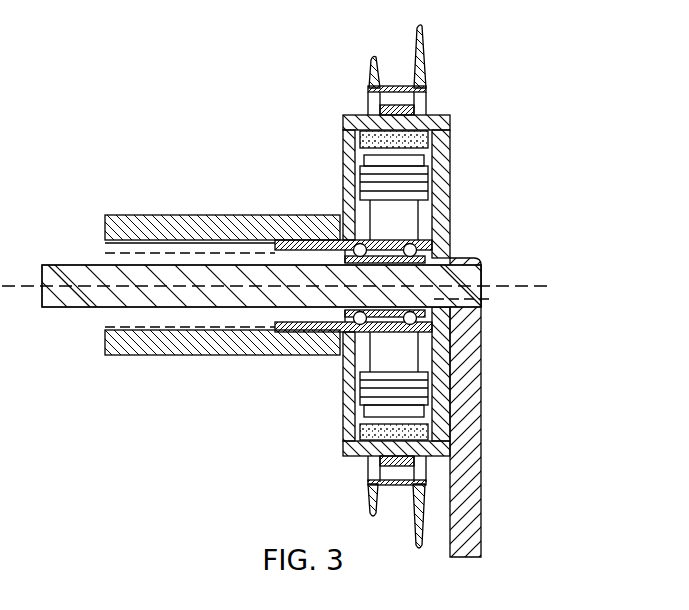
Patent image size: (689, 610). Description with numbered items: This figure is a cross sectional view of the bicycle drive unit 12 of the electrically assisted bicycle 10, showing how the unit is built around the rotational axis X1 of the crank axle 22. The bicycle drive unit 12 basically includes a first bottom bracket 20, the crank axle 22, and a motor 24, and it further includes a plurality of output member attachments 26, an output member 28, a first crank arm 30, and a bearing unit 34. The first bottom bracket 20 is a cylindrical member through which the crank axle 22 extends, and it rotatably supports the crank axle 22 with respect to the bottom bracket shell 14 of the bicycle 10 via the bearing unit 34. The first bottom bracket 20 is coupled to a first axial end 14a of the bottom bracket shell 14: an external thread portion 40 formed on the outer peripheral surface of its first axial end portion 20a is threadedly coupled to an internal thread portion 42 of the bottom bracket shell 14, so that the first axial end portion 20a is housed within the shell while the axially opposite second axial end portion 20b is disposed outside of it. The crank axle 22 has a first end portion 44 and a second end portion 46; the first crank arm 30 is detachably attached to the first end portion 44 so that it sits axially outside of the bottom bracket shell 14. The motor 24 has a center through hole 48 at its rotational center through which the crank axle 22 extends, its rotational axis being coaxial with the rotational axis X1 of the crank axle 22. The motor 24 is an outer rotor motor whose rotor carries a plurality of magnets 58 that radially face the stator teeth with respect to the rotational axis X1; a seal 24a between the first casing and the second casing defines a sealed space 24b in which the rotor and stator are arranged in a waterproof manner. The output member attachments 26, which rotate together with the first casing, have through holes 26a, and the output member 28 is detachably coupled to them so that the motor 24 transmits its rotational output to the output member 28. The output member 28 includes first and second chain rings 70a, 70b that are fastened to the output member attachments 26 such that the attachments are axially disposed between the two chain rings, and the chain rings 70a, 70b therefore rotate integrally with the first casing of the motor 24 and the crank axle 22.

The electrically assisted bicycle 10 is at (141, 170).
The bicycle drive unit 12 is at (531, 112).
The bottom bracket shell 14 is at (200, 212).
The first axial end 14a is at (293, 229).
The first bottom bracket 20 is at (293, 343).
The first axial end portion 20a is at (275, 243).
The second axial end portion 20b is at (402, 240).
The crank axle 22 is at (70, 311).
The motor 24 is at (327, 152).
The seal 24a is at (341, 128).
The sealed space 24b is at (437, 228).
The output member attachments 26 is at (404, 81).
The through holes 26a is at (418, 98).
The output member 28 is at (375, 31).
The first crank arm 30 is at (485, 501).
The bearing unit 34 is at (313, 243).
The external thread portion 40 is at (314, 347).
The internal thread portion 42 is at (280, 322).
The first end portion 44 is at (470, 276).
The second end portion 46 is at (80, 273).
The center through hole 48 is at (475, 299).
The magnets 58 is at (408, 136).
The first chain ring 70a is at (424, 33).
The second chain ring 70b is at (370, 60).
The rotational axis X1 is at (531, 289).